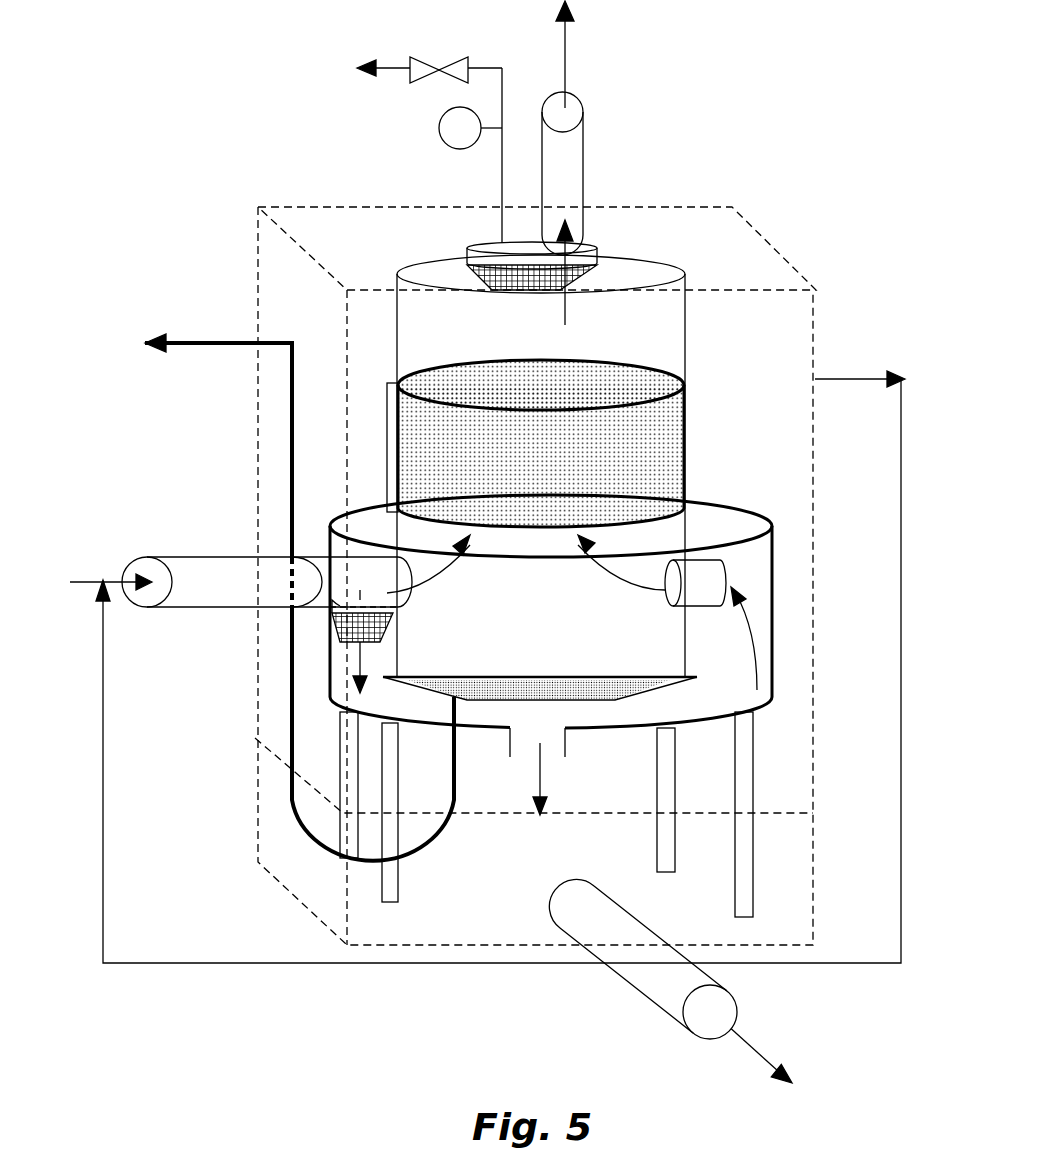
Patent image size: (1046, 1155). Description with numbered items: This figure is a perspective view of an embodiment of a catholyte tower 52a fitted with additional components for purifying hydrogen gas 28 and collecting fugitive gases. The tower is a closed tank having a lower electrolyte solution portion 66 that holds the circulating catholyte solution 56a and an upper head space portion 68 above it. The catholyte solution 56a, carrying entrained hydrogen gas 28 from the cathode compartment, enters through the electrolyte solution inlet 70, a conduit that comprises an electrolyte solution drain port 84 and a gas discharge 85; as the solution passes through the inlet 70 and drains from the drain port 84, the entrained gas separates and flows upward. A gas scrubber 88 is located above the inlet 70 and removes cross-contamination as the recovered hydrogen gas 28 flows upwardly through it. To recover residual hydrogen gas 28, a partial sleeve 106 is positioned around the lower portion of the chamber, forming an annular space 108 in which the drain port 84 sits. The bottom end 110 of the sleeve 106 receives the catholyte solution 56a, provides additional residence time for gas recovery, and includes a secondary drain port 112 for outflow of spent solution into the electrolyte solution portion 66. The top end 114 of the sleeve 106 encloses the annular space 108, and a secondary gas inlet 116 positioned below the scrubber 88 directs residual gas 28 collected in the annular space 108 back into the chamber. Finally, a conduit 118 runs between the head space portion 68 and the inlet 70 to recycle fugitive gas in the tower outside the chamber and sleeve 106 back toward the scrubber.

The catholyte tower 52a is at (690, 135).
The conduit 118 is at (847, 379).
The upper head space portion 68 is at (782, 337).
The gas scrubber 88 is at (688, 432).
The hydrogen gas 28 is at (400, 540).
The top end of the sleeve 114 is at (695, 522).
The secondary gas inlet 116 is at (723, 573).
The annular space 108 is at (685, 663).
The partial sleeve 106 is at (772, 683).
The bottom end of the sleeve 110 is at (640, 733).
The secondary drain port 112 is at (550, 737).
The lower electrolyte solution portion 66 is at (720, 903).
The catholyte solution 56a is at (77, 580).
The gas discharge 85 is at (445, 575).
The electrolyte solution inlet 70 is at (242, 556).
The electrolyte solution drain port 84 is at (335, 612).